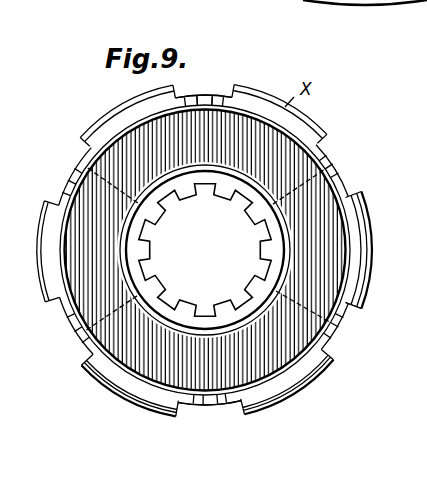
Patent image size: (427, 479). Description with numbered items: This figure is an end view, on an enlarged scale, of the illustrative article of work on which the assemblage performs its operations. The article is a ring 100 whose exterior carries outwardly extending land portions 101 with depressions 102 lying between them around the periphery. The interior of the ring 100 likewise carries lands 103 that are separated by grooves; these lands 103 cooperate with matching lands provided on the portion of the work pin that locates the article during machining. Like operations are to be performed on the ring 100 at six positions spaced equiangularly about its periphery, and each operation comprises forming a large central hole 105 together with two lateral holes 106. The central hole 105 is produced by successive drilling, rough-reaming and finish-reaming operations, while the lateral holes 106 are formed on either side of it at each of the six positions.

The ring 100 is at (323, 210).
The land portions 101 is at (365, 238).
The depressions 102 is at (385, 214).
The lands 103 is at (232, 200).
The large central hole 105 is at (213, 122).
The lateral holes 106 is at (208, 96).